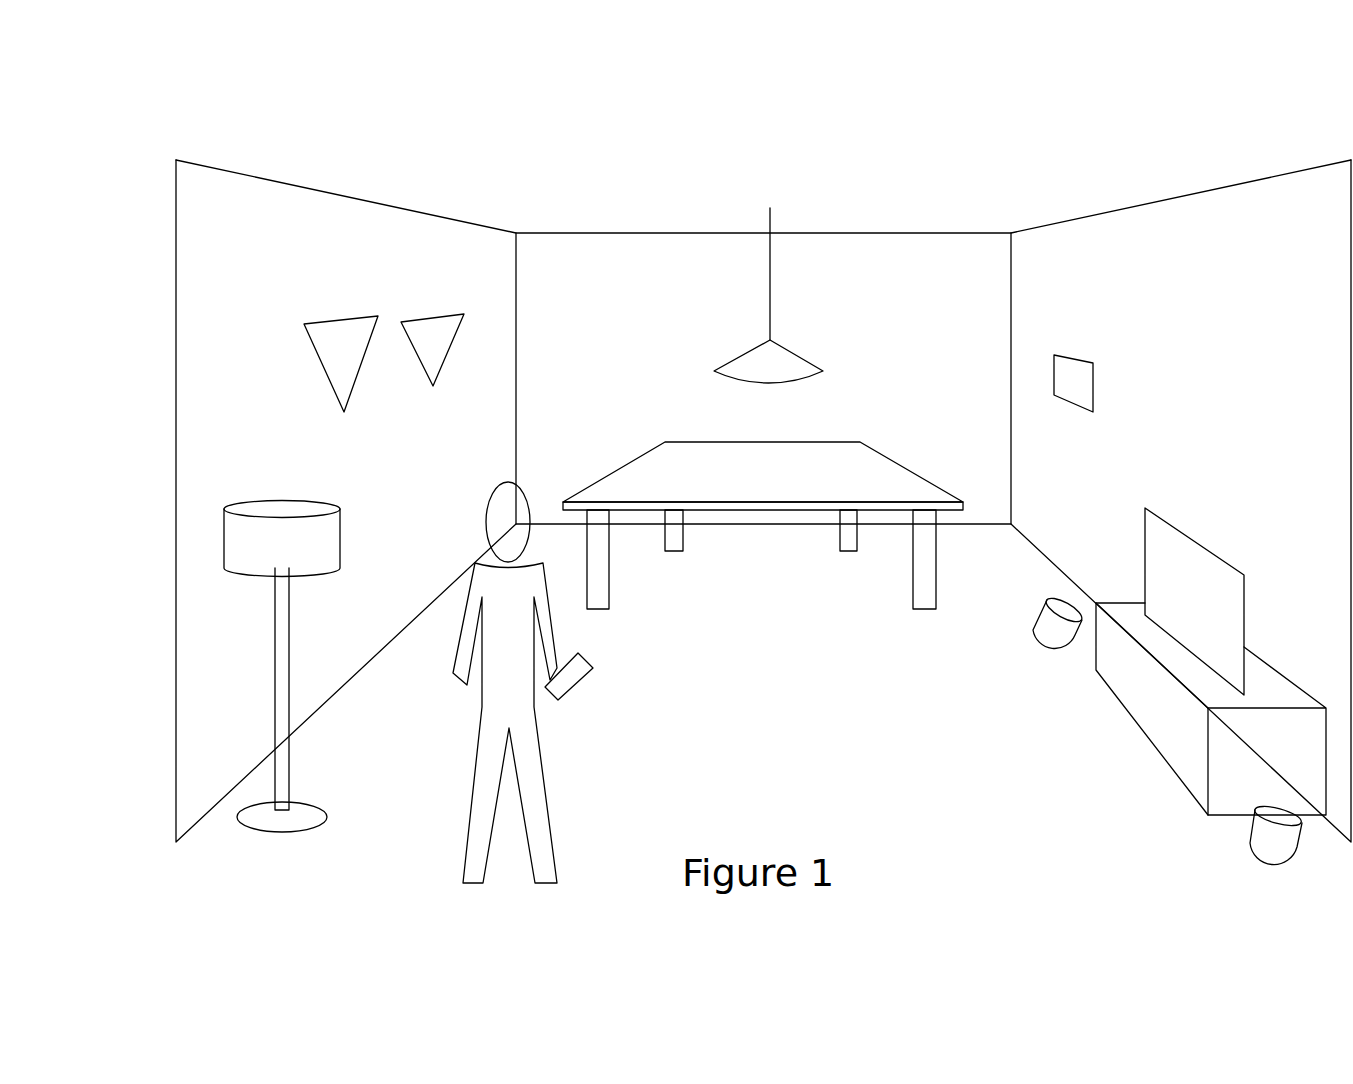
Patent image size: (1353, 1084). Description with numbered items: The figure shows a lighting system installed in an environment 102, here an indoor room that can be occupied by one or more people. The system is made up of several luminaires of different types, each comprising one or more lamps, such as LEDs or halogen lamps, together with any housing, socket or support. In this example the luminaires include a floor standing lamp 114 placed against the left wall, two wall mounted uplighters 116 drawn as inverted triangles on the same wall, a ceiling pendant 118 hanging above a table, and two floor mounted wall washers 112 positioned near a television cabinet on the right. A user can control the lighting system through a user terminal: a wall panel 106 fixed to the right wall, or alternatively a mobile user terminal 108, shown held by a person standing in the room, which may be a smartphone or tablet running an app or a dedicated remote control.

The environment 102 is at (984, 207).
The wall panel 106 is at (1075, 360).
The mobile user terminal 108 is at (578, 688).
The floor mounted wall washers 112 is at (1032, 642).
The floor standing lamp 114 is at (223, 538).
The wall mounted uplighters 116 is at (428, 317).
The ceiling pendant 118 is at (740, 355).